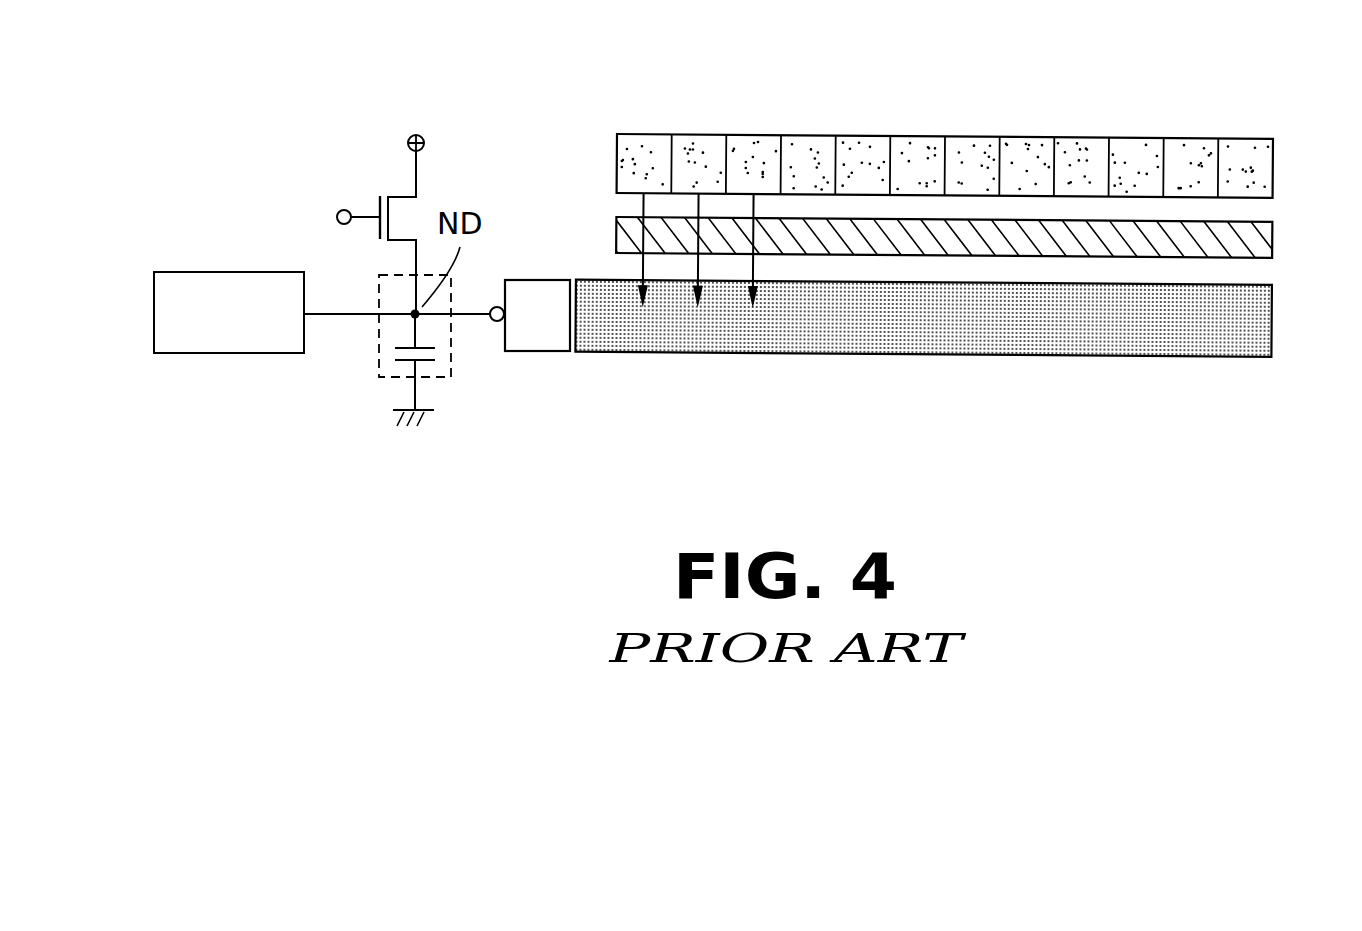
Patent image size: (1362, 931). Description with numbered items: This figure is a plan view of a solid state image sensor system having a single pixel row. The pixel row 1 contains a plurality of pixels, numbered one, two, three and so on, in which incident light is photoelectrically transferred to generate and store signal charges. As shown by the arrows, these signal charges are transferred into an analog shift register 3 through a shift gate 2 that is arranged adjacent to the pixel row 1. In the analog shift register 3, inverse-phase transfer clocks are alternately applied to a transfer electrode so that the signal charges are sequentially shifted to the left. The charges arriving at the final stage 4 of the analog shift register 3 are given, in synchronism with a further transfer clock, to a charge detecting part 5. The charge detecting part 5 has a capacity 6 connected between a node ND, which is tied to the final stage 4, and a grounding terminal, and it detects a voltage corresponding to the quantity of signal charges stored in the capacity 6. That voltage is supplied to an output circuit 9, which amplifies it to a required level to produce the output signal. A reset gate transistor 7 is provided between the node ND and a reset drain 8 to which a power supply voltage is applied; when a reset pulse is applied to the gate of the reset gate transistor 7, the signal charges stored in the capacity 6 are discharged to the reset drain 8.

The pixel row 1 is at (1273, 140).
The shift gate 2 is at (1273, 238).
The analog shift register 3 is at (1273, 312).
The final stage 4 is at (538, 280).
The charge detecting part 5 is at (380, 377).
The capacity 6 is at (432, 370).
The reset gate transistor 7 is at (380, 192).
The reset drain 8 is at (417, 135).
The output circuit 9 is at (154, 312).